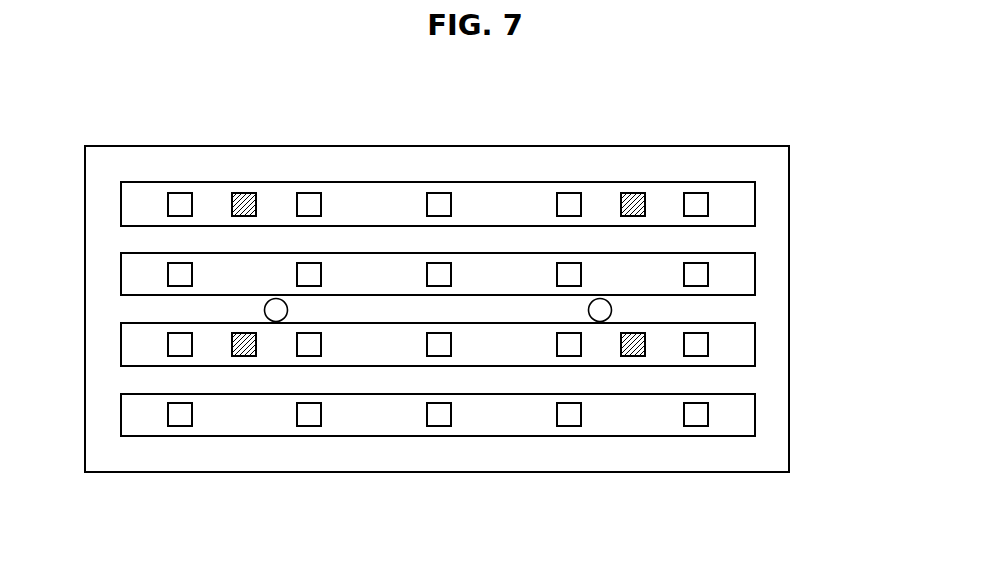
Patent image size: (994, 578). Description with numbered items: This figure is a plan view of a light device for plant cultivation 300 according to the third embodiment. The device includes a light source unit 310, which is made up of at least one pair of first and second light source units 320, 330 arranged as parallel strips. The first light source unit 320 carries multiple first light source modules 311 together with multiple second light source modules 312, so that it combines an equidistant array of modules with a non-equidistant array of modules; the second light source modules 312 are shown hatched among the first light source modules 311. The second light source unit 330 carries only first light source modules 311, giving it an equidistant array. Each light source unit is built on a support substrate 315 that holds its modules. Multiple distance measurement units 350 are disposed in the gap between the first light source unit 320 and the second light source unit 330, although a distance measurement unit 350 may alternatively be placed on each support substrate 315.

The light device for plant cultivation 300 is at (74, 90).
The light source unit 310 is at (521, 202).
The first light source module 311 is at (567, 194).
The second light source module 312 is at (627, 194).
The support substrate 315 is at (504, 200).
The first light source unit 320 is at (491, 168).
The second light source unit 330 is at (773, 273).
The distance measurement unit 350 is at (600, 322).